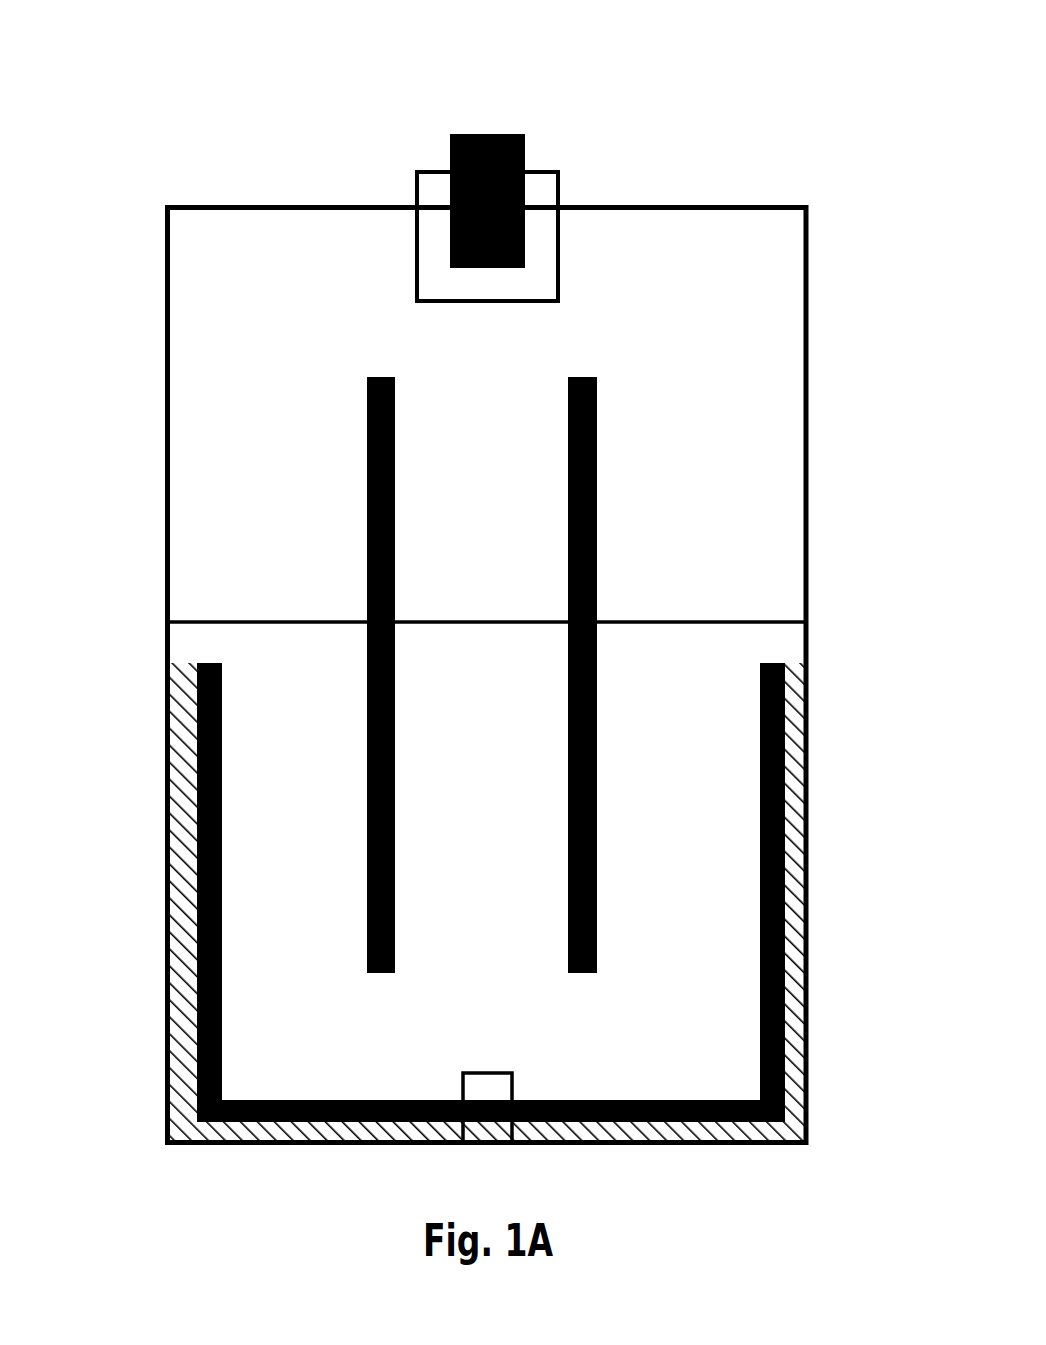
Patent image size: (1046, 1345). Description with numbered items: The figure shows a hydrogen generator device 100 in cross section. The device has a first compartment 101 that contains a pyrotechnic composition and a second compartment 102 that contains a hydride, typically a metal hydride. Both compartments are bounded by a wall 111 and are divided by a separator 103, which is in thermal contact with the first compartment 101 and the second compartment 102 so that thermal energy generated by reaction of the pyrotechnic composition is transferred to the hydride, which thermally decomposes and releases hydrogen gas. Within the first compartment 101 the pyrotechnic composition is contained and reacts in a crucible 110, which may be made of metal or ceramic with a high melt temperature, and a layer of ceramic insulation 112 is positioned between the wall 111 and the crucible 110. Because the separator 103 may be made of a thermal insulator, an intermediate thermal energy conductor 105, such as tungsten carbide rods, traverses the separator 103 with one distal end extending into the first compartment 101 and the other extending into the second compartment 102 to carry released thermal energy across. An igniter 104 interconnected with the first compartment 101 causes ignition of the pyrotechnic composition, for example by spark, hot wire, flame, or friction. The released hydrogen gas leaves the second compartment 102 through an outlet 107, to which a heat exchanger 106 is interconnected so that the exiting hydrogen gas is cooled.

The hydrogen generator device 100 is at (500, 100).
The first compartment 101 is at (690, 945).
The second compartment 102 is at (590, 333).
The separator 103 is at (167, 625).
The igniter 104 is at (512, 1073).
The intermediate thermal energy conductor 105 is at (367, 420).
The heat exchanger 106 is at (560, 196).
The outlet 107 is at (450, 148).
The crucible 110 is at (197, 980).
The wall 111 is at (178, 776).
The layer of ceramic insulation 112 is at (350, 1137).